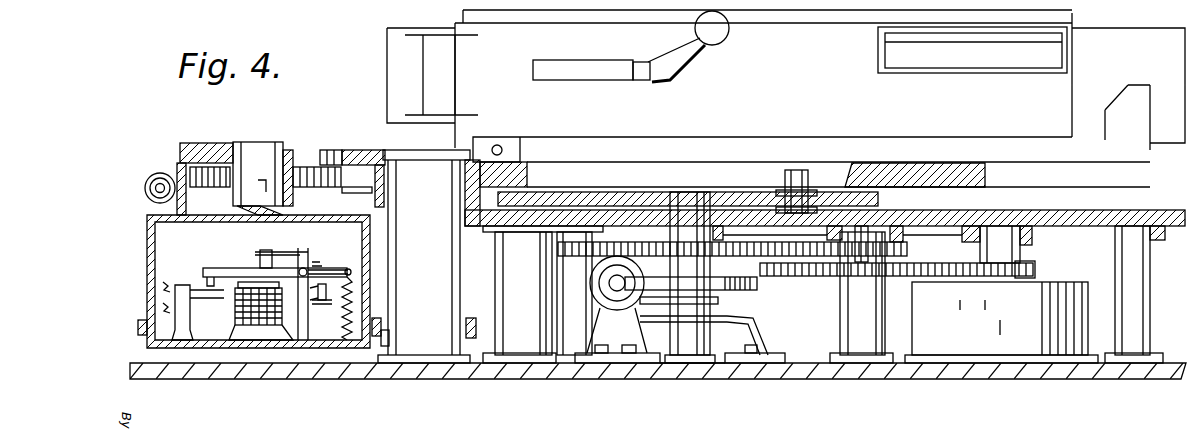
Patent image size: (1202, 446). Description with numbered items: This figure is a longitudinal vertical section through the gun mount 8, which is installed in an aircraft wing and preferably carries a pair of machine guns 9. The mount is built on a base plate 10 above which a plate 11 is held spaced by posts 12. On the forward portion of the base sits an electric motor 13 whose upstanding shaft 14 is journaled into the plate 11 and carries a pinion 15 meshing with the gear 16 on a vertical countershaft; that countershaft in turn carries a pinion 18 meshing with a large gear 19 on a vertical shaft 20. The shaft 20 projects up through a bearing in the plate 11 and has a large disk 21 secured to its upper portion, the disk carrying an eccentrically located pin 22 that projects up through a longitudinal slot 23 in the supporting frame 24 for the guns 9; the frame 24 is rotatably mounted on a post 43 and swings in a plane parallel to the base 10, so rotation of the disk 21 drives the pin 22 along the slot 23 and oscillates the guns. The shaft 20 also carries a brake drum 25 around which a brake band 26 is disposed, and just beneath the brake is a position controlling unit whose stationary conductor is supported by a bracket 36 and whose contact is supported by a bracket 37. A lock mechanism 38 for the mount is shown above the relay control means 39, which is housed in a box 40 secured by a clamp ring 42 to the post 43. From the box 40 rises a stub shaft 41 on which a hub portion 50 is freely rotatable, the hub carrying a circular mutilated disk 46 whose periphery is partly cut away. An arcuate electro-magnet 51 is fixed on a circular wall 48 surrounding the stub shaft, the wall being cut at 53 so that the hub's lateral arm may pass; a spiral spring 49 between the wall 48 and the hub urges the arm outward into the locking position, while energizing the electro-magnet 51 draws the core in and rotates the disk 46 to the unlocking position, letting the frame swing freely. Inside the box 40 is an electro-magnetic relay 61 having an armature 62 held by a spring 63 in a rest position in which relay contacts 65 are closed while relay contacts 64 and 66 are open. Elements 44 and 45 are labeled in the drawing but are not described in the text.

The gun mount 8 is at (1102, 384).
The machine gun 9 is at (786, 86).
The base plate 10 is at (730, 366).
The plate 11 is at (930, 225).
The posts 12 is at (565, 355).
The electric motor 13 is at (975, 340).
The upstanding shaft 14 is at (997, 226).
The pinion 15 is at (1030, 270).
The gear 16 is at (912, 272).
The pinion 18 is at (860, 243).
The large gear 19 is at (558, 248).
The vertical shaft 20 is at (688, 203).
The large disk 21 is at (590, 200).
The eccentrically located pin 22 is at (800, 172).
The longitudinal slot 23 is at (646, 173).
The supporting frame 24 is at (888, 183).
The brake drum 25 is at (752, 292).
The brake band 26 is at (757, 284).
The bracket 36 is at (755, 345).
The bracket 37 is at (637, 318).
The lock mechanism 38 is at (240, 172).
The relay control means 39 is at (218, 312).
The box 40 is at (147, 258).
The stub shaft 41 is at (255, 152).
The clamp ring 42 is at (374, 352).
The post 43 is at (421, 345).
The hatched member 44 is at (357, 150).
The block 45 is at (332, 148).
The circular mutilated disk 46 is at (183, 148).
The circular wall 48 is at (192, 208).
The spiral spring 49 is at (313, 188).
The hub portion 50 is at (288, 160).
The electro-magnet 51 is at (146, 189).
The cut 53 is at (343, 190).
The electro-magnetic relay 61 is at (262, 312).
The armature 62 is at (222, 268).
The spring 63 is at (343, 322).
The relay contacts 64 is at (193, 311).
The relay contacts 65 is at (328, 300).
The relay contacts 66 is at (282, 254).